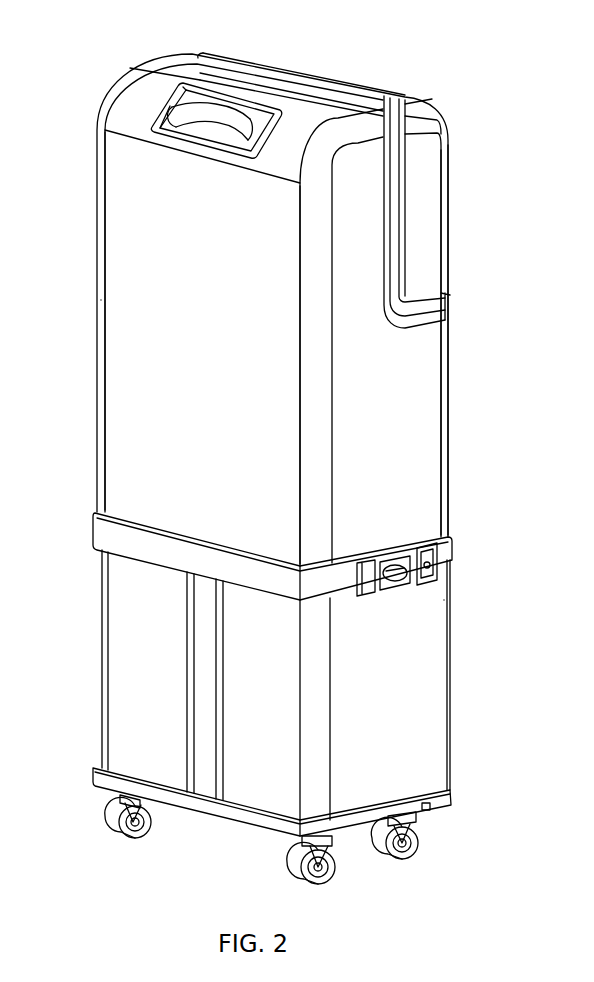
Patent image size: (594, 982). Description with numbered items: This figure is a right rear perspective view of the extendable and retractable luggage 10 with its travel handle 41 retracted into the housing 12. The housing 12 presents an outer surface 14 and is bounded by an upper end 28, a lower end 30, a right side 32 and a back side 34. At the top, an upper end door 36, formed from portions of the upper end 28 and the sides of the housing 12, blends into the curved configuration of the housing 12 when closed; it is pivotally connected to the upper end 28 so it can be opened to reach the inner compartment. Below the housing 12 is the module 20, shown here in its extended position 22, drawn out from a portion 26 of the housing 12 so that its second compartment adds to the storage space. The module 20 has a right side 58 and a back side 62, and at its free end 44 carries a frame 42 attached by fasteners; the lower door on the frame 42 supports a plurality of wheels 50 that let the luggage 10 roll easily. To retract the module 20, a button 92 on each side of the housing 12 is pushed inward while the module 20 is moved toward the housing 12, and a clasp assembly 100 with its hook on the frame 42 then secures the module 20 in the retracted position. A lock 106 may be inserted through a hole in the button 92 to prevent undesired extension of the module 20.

The extendable and retractable luggage 10 is at (511, 93).
The housing 12 is at (118, 230).
The outer surface 14 is at (118, 307).
The module 20 is at (117, 590).
The extended position 22 is at (512, 269).
The portion of the housing 26 is at (432, 583).
The upper end 28 is at (299, 120).
The lower end 30 is at (118, 545).
The right side 32 is at (430, 422).
The back side 34 is at (117, 393).
The upper end door 36 is at (432, 218).
The travel handle 41 is at (170, 93).
The frame 42 is at (251, 818).
The free end 44 is at (105, 767).
The wheels 50 is at (150, 838).
The right side of the module 58 is at (428, 693).
The back side of the module 62 is at (117, 645).
The button 92 is at (400, 583).
The clasp assembly 100 is at (438, 566).
The lock 106 is at (372, 581).